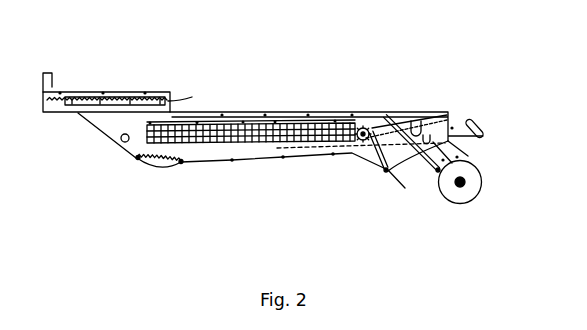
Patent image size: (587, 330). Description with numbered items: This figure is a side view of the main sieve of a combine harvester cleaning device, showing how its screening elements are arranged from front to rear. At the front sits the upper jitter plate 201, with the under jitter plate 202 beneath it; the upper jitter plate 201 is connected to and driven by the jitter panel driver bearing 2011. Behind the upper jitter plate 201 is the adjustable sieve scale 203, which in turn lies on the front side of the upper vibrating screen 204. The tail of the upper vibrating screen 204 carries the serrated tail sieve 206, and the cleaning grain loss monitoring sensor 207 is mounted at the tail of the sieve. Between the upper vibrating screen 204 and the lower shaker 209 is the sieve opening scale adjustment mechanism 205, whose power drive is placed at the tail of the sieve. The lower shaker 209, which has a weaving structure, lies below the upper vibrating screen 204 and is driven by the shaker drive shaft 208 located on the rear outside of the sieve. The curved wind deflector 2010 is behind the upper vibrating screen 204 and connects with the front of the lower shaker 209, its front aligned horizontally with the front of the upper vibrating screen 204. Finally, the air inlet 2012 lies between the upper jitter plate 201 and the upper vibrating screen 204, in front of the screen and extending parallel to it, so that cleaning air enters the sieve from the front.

The upper jitter plate 201 is at (68, 92).
The under jitter plate 202 is at (148, 155).
The adjustable sieve scale 203 is at (200, 125).
The upper vibrating screen 204 is at (290, 122).
The sieve opening scale adjustment mechanism 205 is at (360, 128).
The serrated tail sieve 206 is at (383, 122).
The cleaning grain loss monitoring sensor 207 is at (477, 118).
The shaker drive shaft 208 is at (459, 187).
The lower shaker 209 is at (303, 157).
The curved wind deflector 2010 is at (165, 166).
The jitter panel driver bearing 2011 is at (126, 142).
The air inlet 2012 is at (92, 123).